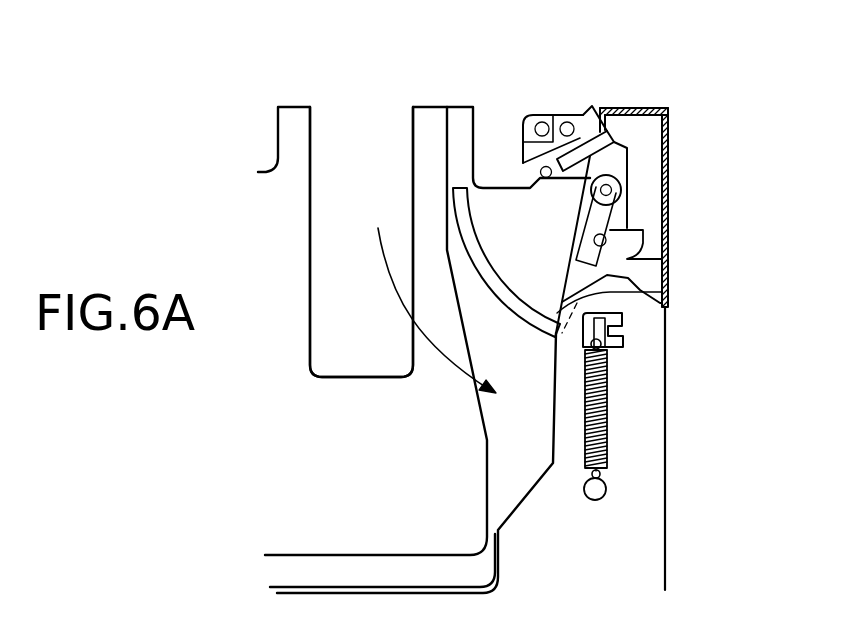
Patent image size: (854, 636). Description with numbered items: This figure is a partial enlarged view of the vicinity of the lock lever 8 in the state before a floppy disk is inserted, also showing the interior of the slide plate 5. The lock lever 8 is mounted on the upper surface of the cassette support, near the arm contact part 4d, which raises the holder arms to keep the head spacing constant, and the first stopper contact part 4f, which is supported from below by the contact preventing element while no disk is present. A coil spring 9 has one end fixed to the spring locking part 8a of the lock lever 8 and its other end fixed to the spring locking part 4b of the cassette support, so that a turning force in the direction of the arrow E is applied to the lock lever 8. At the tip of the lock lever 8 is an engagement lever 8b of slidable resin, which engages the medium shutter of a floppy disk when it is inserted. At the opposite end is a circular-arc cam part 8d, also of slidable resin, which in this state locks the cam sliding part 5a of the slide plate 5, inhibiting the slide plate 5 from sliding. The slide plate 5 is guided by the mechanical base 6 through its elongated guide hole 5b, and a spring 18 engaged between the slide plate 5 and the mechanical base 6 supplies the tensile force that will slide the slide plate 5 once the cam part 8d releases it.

The arm contact part 4d is at (427, 113).
The first stopper contact part 4f is at (458, 113).
The spring locking part 4b is at (523, 172).
The slide plate 5 is at (668, 212).
The cam sliding part 5a is at (640, 108).
The guide hole 5b is at (605, 302).
The mechanical base 6 is at (612, 540).
The lock lever 8 is at (570, 282).
The spring locking part 8a is at (640, 231).
The engagement lever 8b is at (642, 290).
The cam part 8d is at (580, 112).
The coil spring 9 is at (553, 170).
The spring 18 is at (610, 395).
The arrow E is at (435, 310).